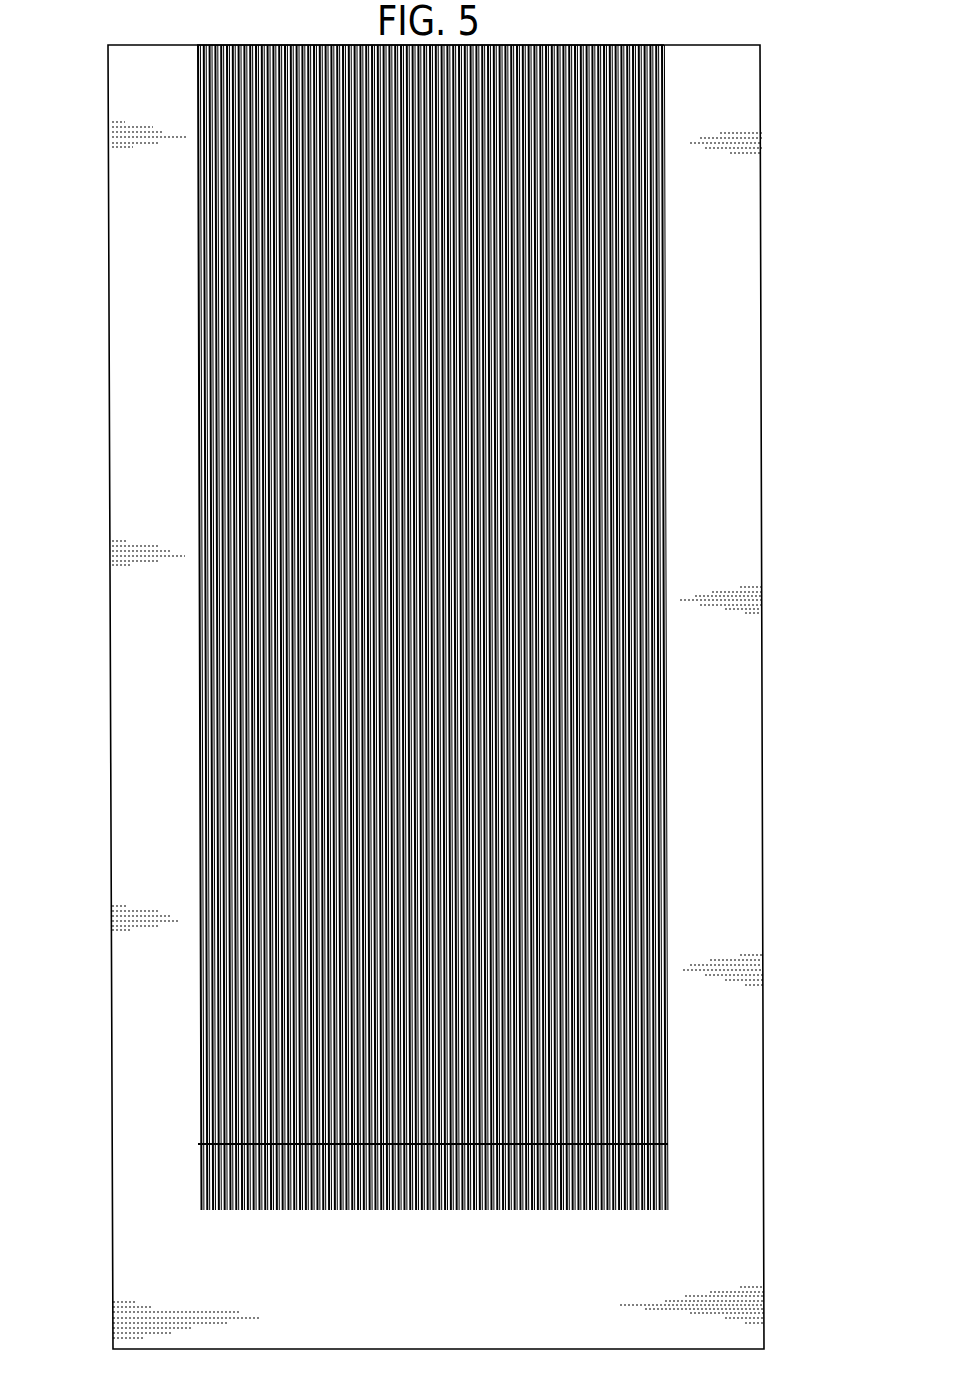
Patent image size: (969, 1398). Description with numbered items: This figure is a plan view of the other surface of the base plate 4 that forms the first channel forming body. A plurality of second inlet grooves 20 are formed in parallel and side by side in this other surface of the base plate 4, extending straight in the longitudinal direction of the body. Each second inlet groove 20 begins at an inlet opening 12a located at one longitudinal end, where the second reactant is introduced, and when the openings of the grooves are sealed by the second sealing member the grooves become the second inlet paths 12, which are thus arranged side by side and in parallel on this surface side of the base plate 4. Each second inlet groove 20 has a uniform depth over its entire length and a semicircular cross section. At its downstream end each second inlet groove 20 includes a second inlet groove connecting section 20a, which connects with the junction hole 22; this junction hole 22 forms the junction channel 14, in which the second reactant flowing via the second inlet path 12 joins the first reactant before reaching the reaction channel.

The base plate 4 is at (110, 401).
The inlet opening 12a is at (620, 45).
The second inlet path 12 is at (548, 492).
The second inlet groove 20 is at (666, 405).
The second inlet groove connecting section 20a is at (668, 1131).
The junction channel 14 is at (550, 1160).
The junction hole 22 is at (668, 1185).